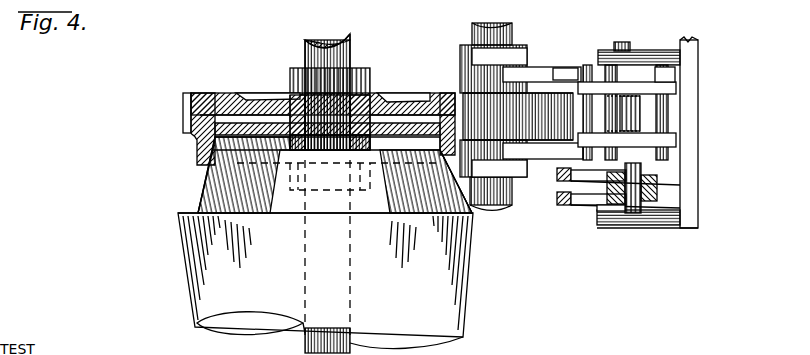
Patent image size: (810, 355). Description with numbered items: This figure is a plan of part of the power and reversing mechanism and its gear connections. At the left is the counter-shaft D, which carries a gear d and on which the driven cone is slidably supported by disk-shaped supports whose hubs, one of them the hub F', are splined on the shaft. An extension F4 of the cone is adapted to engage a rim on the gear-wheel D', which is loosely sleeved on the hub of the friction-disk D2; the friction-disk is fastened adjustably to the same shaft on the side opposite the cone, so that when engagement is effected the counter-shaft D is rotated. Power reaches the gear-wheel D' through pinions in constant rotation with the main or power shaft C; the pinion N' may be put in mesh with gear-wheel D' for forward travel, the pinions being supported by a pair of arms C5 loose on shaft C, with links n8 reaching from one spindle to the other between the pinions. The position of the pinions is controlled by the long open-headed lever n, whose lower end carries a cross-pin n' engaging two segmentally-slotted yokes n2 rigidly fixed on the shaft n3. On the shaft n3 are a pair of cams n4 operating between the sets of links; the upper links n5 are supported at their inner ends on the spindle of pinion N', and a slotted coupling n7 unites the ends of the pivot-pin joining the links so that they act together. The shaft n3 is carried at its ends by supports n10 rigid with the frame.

The counter-shaft D is at (327, 79).
The gear-wheel D' is at (182, 128).
The friction-disk D2 is at (257, 82).
The gear d is at (440, 138).
The extension of cone F F4 is at (208, 188).
The hub F' is at (337, 256).
The main or power shaft C is at (468, 33).
The arms C5 is at (498, 60).
The pinion N' is at (518, 93).
The links n8 is at (528, 80).
The upper links n5 is at (562, 66).
The slotted coupling n7 is at (592, 62).
The shaft n3 is at (626, 50).
The supports n10 is at (656, 52).
The cams n4 is at (628, 134).
The segmentally-slotted yokes n2 is at (556, 178).
The long open-headed lever n is at (637, 188).
The cross-pin n' is at (615, 229).